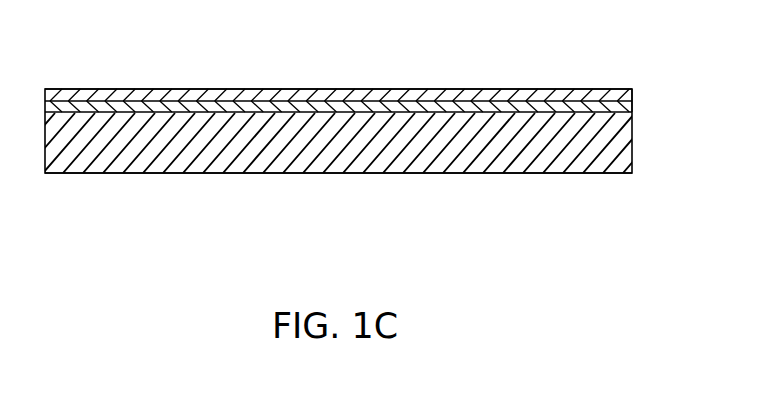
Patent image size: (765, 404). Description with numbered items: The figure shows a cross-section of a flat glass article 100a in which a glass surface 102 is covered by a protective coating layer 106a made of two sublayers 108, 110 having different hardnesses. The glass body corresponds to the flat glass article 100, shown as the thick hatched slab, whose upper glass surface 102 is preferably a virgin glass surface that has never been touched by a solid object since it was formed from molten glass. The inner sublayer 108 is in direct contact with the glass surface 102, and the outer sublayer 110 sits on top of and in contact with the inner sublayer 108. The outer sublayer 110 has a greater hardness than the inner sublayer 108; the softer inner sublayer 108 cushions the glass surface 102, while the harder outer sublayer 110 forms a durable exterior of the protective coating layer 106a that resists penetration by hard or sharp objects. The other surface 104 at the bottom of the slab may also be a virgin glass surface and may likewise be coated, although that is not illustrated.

The flat glass article 100a is at (140, 88).
The flat glass article 100 is at (260, 162).
The glass surface 102 is at (259, 110).
The other surface 104 is at (449, 173).
The protective coating layer 106a is at (637, 112).
The inner sublayer 108 is at (535, 108).
The outer sublayer 110 is at (429, 93).